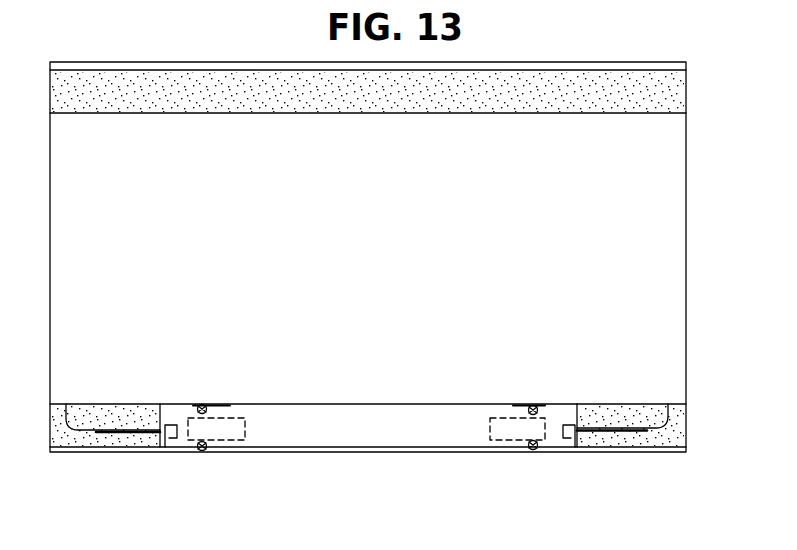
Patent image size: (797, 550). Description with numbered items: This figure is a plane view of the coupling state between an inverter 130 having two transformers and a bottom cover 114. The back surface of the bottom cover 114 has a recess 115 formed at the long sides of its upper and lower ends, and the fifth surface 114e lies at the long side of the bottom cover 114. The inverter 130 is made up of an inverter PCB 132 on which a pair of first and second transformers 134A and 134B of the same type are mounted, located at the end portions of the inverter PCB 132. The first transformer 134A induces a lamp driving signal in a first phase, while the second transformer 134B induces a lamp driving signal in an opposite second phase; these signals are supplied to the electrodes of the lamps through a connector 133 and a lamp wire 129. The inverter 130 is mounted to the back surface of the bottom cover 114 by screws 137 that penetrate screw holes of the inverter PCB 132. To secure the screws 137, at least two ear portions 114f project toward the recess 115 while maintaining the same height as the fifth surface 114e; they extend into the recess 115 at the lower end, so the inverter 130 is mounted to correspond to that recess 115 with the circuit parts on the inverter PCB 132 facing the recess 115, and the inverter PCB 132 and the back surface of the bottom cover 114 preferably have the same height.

The bottom cover 114 is at (675, 240).
The fifth surface 114e is at (56, 456).
The ear portions 114f is at (203, 404).
The recess 115 is at (379, 98).
The lamp wire 129 is at (97, 433).
The inverter 130 is at (302, 460).
The inverter PCB 132 is at (363, 413).
The connector 133 is at (168, 448).
The first transformer 134A is at (218, 446).
The second transformer 134B is at (515, 446).
The screws 137 is at (209, 443).